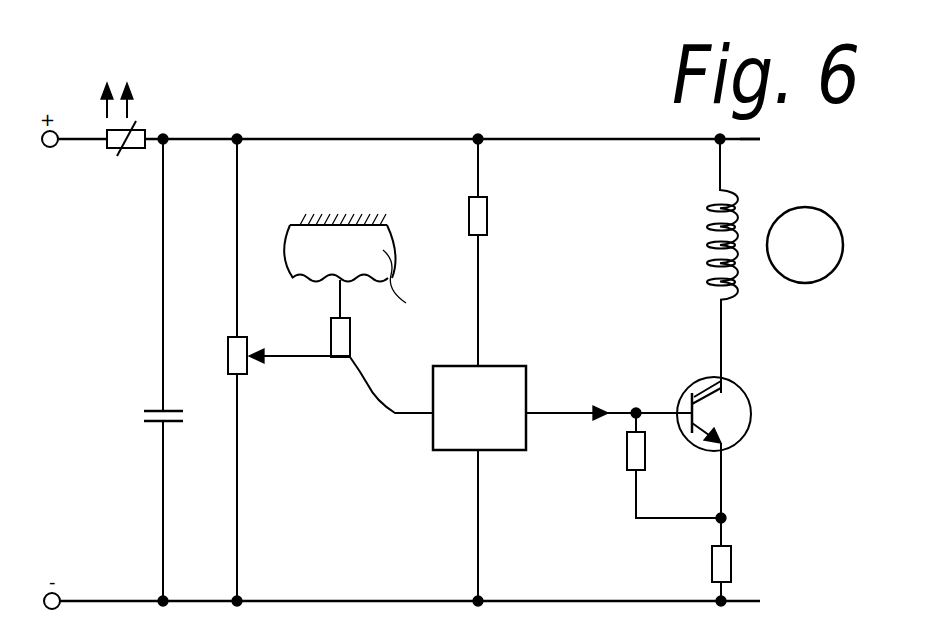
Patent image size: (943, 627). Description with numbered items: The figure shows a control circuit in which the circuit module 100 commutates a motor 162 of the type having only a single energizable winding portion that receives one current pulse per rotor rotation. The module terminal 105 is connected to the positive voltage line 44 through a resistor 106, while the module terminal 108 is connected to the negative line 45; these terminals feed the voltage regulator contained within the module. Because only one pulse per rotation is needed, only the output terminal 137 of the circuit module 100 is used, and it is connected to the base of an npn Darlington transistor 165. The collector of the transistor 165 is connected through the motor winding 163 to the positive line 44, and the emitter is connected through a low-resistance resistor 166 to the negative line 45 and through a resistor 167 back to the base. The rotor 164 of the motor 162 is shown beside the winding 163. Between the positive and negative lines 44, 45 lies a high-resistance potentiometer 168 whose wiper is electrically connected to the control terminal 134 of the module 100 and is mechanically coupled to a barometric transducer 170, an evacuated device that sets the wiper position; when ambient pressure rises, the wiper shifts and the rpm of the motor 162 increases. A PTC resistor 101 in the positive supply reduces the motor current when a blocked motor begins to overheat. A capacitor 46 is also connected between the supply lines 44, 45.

The positive voltage line 44 is at (465, 138).
The negative voltage line 45 is at (337, 599).
The capacitor 46 is at (172, 410).
The circuit module 100 is at (494, 421).
The PTC resistor 101 is at (106, 147).
The terminal 105 is at (485, 364).
The resistor 106 is at (488, 212).
The terminal 108 is at (477, 452).
The control terminal 134 is at (430, 415).
The output terminal 137 is at (527, 403).
The motor 162 is at (820, 161).
The motor winding 163 is at (720, 245).
The rotor 164 is at (803, 283).
The npn Darlington transistor 165 is at (735, 446).
The low-resistance resistor 166 is at (733, 560).
The resistor 167 is at (646, 452).
The high-resistance potentiometer 168 is at (225, 353).
The barometric transducer 170 is at (330, 244).